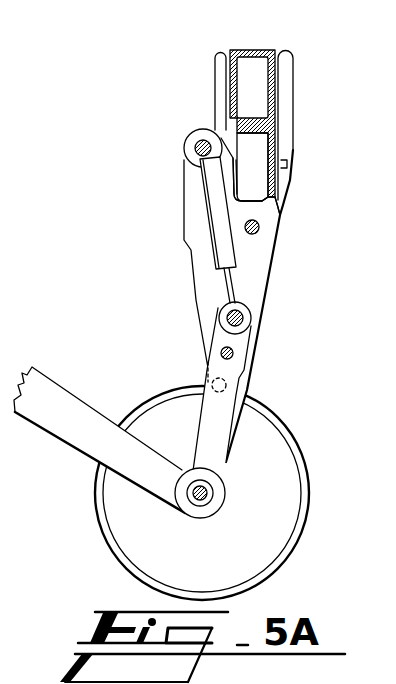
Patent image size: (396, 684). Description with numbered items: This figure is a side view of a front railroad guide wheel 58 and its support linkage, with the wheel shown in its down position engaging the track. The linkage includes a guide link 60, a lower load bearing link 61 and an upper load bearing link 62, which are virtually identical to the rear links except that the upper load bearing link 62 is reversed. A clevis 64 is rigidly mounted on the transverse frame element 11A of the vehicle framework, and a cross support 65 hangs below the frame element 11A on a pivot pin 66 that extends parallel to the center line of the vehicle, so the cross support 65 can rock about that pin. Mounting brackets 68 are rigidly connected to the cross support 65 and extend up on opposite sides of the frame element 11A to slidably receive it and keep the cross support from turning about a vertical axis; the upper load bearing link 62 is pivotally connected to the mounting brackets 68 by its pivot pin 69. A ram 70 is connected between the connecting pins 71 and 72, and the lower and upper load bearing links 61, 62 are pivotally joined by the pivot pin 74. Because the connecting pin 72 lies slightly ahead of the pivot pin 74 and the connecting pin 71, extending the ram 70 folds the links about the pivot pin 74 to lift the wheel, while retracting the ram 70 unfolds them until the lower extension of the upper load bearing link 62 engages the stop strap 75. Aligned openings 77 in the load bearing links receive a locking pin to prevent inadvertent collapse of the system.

The transverse frame element 11A is at (258, 62).
The forward railroad guide wheel 58 is at (308, 510).
The guide link 60 is at (72, 452).
The lower load bearing link 61 is at (220, 432).
The upper load bearing link 62 is at (270, 282).
The clevis 64 is at (283, 95).
The cross support 65 is at (263, 148).
The pivot pin 66 is at (290, 170).
The mounting brackets 68 is at (298, 199).
The pivot pin 69 is at (259, 227).
The ram 70 is at (212, 213).
The connecting pin 71 is at (196, 148).
The connecting pin 72 is at (227, 318).
The pivot pin 74 is at (234, 353).
The stop strap 75 is at (203, 367).
The openings 77 is at (228, 385).